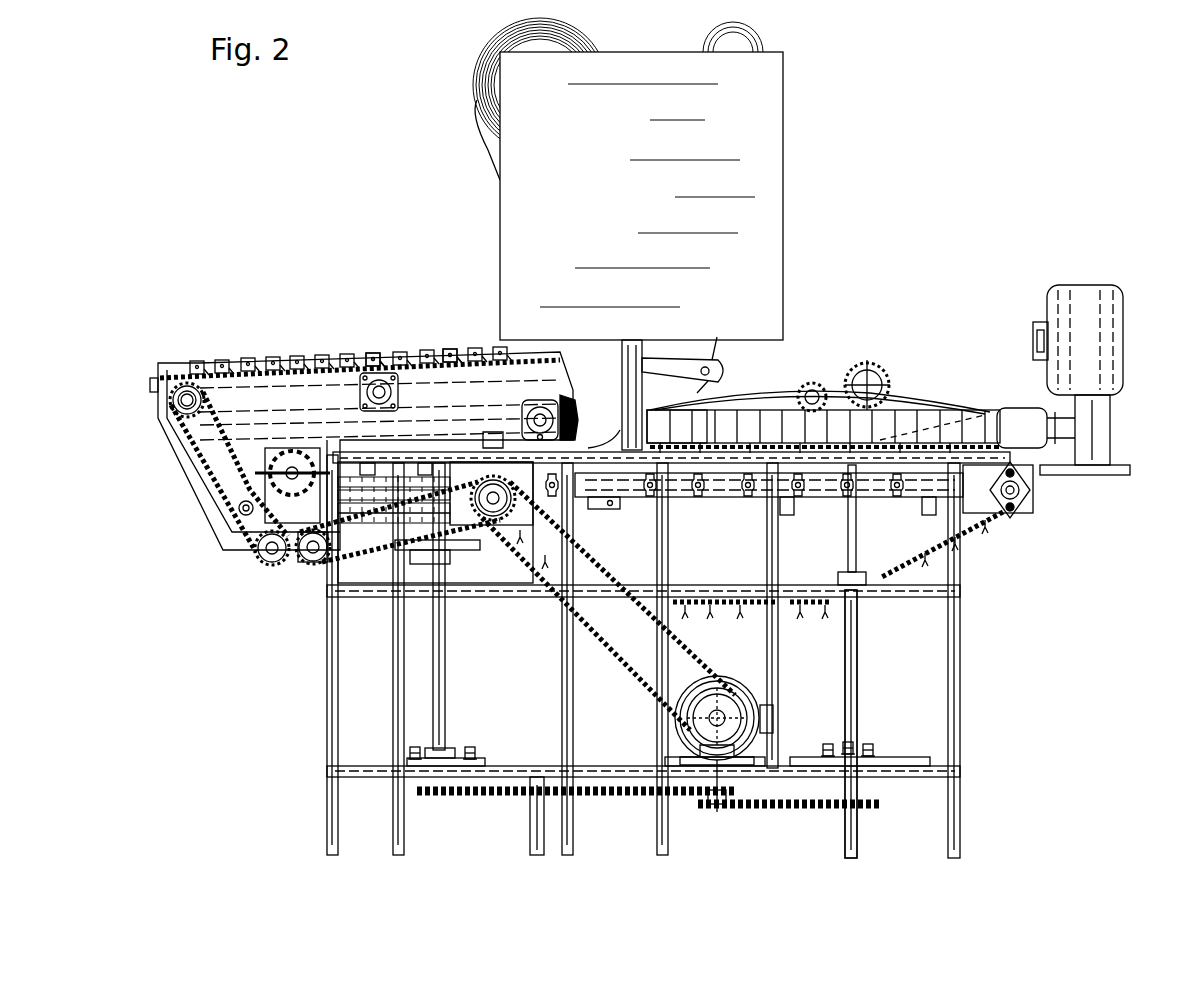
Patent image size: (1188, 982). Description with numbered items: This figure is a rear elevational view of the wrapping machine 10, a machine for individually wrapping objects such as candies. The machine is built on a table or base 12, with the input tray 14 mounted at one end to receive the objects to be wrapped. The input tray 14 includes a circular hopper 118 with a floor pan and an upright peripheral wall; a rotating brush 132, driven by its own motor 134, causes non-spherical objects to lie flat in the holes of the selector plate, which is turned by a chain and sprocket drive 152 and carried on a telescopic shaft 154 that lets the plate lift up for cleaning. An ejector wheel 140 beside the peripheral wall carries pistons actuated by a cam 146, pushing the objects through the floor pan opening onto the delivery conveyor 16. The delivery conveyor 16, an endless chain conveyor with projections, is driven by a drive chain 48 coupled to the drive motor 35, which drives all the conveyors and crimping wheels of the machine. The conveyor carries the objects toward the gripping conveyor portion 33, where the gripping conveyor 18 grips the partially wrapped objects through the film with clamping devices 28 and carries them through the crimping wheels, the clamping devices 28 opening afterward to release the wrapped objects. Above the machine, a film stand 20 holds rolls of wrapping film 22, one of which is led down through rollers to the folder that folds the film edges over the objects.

The wrapping machine 10 is at (942, 166).
The table or base 12 is at (327, 712).
The input tray 14 is at (861, 389).
The delivery conveyor 16 is at (992, 528).
The gripping conveyor 18 is at (383, 372).
The film stand 20 is at (785, 223).
The wrapping film 22 is at (473, 98).
The clamping devices 28 is at (372, 352).
The gripping conveyor portion 33 is at (225, 308).
The drive motor 35 is at (715, 678).
The drive chain 48 is at (640, 690).
The circular hopper 118 is at (715, 387).
The rotating brush 132 is at (1035, 405).
The motor 134 is at (1137, 337).
The ejector wheel 140 is at (862, 388).
The cam 146 is at (882, 378).
The chain and sprocket drive 152 is at (690, 820).
The telescopic shaft 154 is at (857, 645).